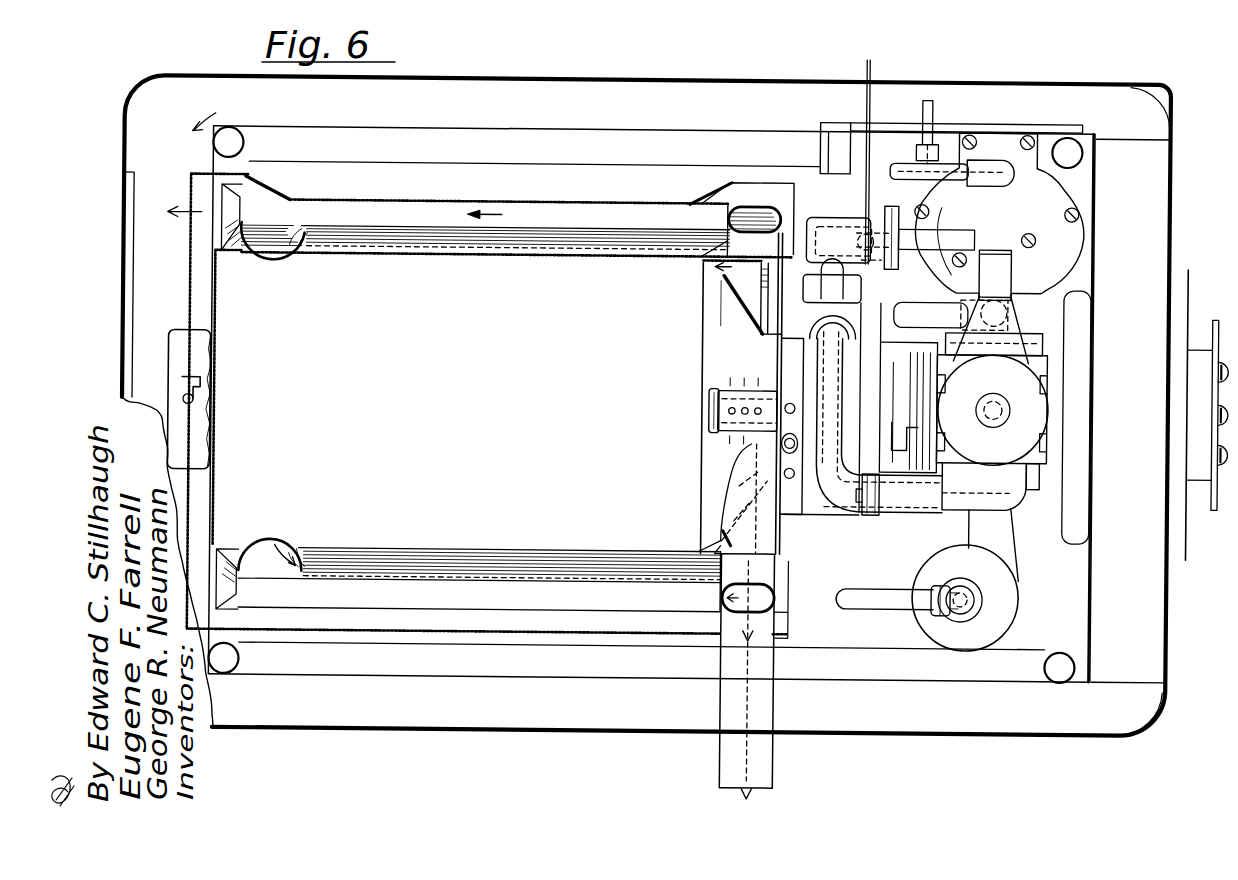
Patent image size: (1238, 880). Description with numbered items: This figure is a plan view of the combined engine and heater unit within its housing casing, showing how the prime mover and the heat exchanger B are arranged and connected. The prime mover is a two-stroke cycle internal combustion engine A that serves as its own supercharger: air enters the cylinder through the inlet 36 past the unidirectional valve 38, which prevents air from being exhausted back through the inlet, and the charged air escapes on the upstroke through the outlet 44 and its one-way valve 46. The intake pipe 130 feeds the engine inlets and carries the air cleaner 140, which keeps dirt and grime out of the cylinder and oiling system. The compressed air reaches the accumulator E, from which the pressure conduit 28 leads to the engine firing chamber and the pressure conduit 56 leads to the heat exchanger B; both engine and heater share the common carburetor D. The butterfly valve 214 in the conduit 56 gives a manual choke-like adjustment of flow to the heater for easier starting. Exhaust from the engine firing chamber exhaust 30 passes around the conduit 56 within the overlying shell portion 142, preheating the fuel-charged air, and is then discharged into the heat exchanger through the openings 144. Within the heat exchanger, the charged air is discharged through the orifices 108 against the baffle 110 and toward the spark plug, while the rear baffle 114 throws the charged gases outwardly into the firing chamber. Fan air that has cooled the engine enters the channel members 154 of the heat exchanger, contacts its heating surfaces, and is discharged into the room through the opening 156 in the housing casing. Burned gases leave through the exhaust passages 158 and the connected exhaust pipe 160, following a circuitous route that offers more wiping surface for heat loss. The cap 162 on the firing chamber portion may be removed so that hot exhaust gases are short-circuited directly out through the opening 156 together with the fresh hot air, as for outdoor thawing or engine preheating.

The opening 156 is at (142, 185).
The cap 162 is at (178, 333).
The channel members 154 is at (583, 226).
The heat exchanger B is at (470, 303).
The rear baffle 114 is at (738, 307).
The orifices 108 is at (728, 405).
The baffle 110 is at (710, 418).
The openings 144 is at (718, 548).
The exhaust passages 158 is at (473, 578).
The exhaust pipe 160 is at (735, 749).
The air cleaner 140 is at (848, 176).
The butterfly valve 214 is at (862, 235).
The pressure conduit 56 is at (940, 236).
The carburetor D is at (1036, 205).
The pressure conduit 28 is at (1003, 279).
The intake pipe 130 is at (898, 287).
The inlet 36 is at (1007, 309).
The unidirectional valve 38 is at (944, 340).
The internal combustion engine A is at (1030, 413).
The shell portion 142 is at (815, 508).
The firing chamber exhaust 30 is at (946, 504).
The valve 46 is at (1032, 488).
The outlet 44 is at (1008, 542).
The accumulator E is at (970, 571).